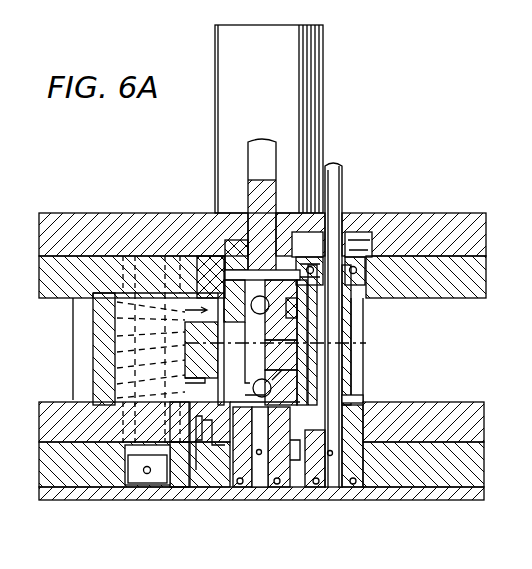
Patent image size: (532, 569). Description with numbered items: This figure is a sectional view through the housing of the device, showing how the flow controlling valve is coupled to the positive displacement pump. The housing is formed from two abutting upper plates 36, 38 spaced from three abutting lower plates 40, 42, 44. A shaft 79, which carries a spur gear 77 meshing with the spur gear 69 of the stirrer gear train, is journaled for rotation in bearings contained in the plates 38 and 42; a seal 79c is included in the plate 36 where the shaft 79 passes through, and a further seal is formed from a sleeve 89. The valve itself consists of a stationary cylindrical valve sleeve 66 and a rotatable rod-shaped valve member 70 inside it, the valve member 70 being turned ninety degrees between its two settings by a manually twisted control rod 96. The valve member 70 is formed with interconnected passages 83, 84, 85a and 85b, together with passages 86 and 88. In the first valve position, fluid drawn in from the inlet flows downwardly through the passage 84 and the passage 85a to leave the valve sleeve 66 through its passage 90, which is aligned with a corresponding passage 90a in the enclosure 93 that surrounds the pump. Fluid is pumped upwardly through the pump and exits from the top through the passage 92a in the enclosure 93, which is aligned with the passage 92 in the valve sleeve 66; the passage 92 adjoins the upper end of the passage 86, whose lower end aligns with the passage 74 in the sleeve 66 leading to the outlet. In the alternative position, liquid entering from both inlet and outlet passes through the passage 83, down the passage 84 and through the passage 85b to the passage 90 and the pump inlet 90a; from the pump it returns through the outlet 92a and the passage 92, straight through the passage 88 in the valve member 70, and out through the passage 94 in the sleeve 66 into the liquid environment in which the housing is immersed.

The upper plate 36 is at (468, 216).
The upper plate 38 is at (460, 298).
The lower plate 40 is at (484, 430).
The lower plate 42 is at (484, 471).
The lower plate 44 is at (484, 499).
The cylindrical valve sleeve 66 is at (366, 343).
The spur gear 69 is at (291, 488).
The rod-shaped valve member 70 is at (300, 323).
The passage 74 is at (278, 362).
The spur gear 77 is at (357, 452).
The shaft 79 is at (340, 167).
The seal 79c is at (363, 256).
The passage 83 is at (300, 358).
The passage 84 is at (300, 385).
The passage 85a is at (214, 400).
The passage 85b is at (302, 402).
The passage 86 is at (300, 350).
The passage 88 is at (307, 258).
The sleeve 89 is at (365, 400).
The passage 90 is at (208, 395).
The passage 90a is at (187, 395).
The passage 92 is at (222, 290).
The passage 92a is at (207, 302).
The enclosure 93 is at (93, 366).
The passage 94 is at (297, 312).
The control rod 96 is at (275, 141).